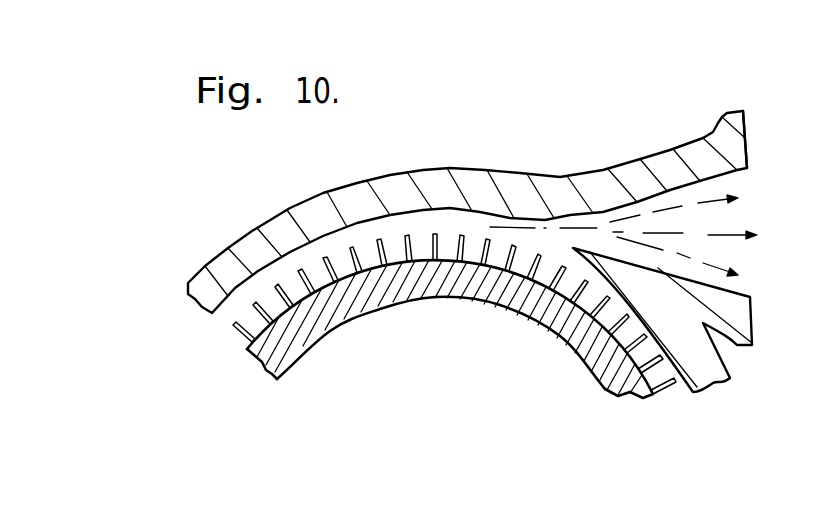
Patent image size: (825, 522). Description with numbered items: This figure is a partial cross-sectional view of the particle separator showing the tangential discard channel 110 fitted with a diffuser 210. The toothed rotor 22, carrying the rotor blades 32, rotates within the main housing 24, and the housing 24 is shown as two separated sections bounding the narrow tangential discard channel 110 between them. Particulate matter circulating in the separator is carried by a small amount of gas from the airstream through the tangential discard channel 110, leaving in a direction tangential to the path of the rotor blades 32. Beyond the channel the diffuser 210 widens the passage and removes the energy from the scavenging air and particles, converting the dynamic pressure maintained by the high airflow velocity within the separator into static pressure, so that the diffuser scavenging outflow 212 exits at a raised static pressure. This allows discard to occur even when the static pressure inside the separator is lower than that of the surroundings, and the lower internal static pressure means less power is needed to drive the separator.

The rotor 22 is at (434, 304).
The housing 24 is at (462, 186).
The rotor blades 32 is at (328, 258).
The tangential discard channel 110 is at (546, 220).
The diffuser 210 is at (733, 158).
The diffuser scavenging outflow 212 is at (736, 223).